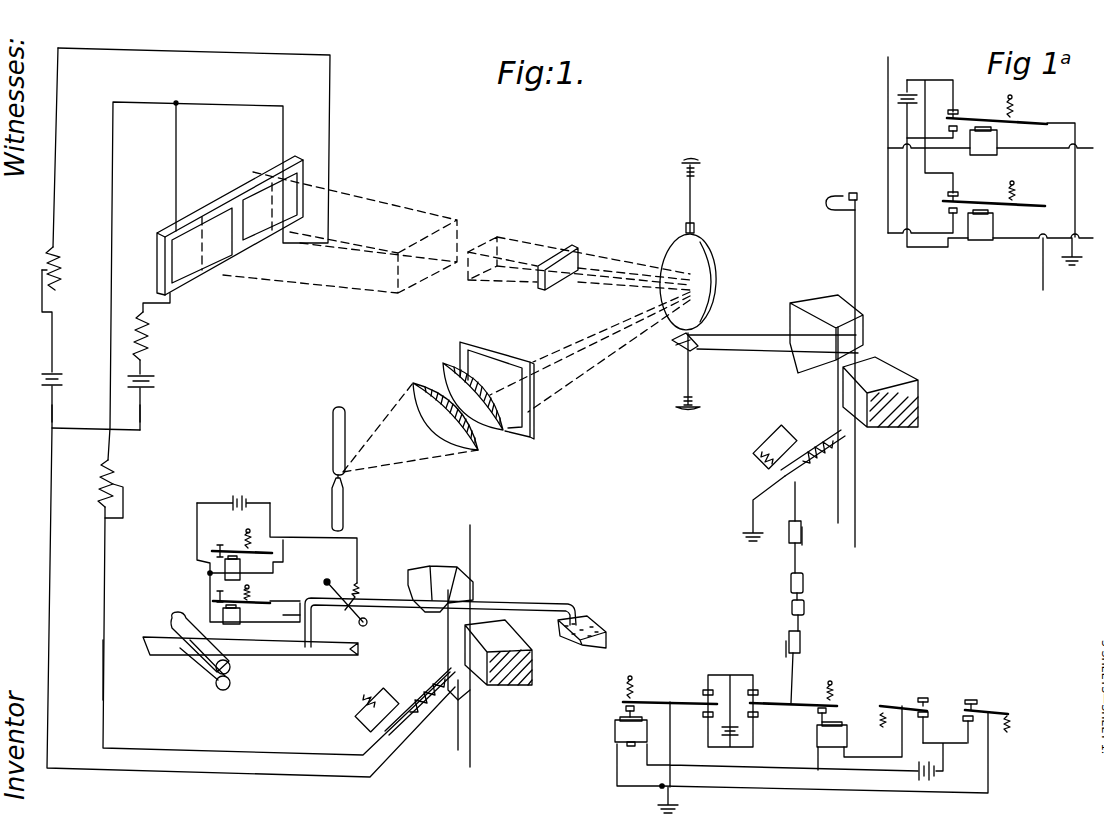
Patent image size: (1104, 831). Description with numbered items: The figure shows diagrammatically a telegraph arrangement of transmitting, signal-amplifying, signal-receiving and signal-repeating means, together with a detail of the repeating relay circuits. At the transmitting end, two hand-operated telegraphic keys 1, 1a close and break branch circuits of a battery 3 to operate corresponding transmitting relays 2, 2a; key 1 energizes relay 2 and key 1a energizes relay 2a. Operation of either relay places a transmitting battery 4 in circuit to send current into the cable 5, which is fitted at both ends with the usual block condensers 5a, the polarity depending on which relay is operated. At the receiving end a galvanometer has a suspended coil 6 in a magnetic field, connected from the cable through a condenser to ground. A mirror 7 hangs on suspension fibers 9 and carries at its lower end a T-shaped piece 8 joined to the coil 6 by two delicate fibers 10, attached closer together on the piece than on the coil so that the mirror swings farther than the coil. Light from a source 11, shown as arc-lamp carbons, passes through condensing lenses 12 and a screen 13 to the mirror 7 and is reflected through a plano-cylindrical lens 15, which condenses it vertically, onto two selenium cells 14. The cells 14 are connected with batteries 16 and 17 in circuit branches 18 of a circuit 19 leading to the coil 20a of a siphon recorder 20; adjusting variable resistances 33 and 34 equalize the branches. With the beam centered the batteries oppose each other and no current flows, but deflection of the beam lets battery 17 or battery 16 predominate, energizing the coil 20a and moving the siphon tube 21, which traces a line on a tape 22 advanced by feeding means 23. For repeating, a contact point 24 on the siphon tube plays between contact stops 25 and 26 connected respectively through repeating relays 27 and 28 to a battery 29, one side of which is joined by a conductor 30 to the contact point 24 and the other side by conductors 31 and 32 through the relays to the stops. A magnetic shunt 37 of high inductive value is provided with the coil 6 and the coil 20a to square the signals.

In FIG. 1, the telegraphic key 1 is at (984, 709).
In FIG. 1, the telegraphic key 1a is at (912, 702).
In FIG. 1, the transmitting relay 2 is at (615, 730).
In FIG. 1, the transmitting relay 2a is at (817, 735).
In FIG. 1, the battery 3 is at (935, 781).
In FIG. 1, the transmitting battery 4 is at (718, 729).
In FIG. 1, the cable 5 is at (805, 592).
In FIG. 1, the block condenser 5a is at (802, 540).
In FIG. 1, the suspended coil 6 is at (833, 383).
In FIG. 1, the mirror 7 is at (715, 268).
In FIG. 1, the T-shaped piece 8 is at (684, 348).
In FIG. 1, the suspension fibers 9 is at (692, 202).
In FIG. 1, the fibers 10 is at (745, 340).
In FIG. 1, the source of light 11 is at (347, 480).
In FIG. 1, the condensing lenses 12 is at (493, 432).
In FIG. 1, the screen 13 is at (536, 430).
In FIG. 1, the selenium cells 14 is at (263, 197).
In FIG. 1, the plano-cylindrical lens 15 is at (568, 247).
In FIG. 1, the battery 16 is at (157, 382).
In FIG. 1, the battery 17 is at (42, 380).
In FIG. 1, the circuit branches 18 is at (50, 412).
In FIG. 1, the circuit 19 is at (103, 662).
In FIG. 1, the siphon recorder 20 is at (498, 672).
In FIG. 1, the coil 20a is at (452, 642).
In FIG. 1, the siphon tube 21 is at (368, 598).
In FIG. 1, the tape 22 is at (262, 647).
In FIG. 1, the feeding means 23 is at (208, 657).
In FIG. 1, the contact point 24 is at (352, 580).
In FIG. 1, the contact stop 25 is at (379, 629).
In FIG. 1, the contact stop 26 is at (337, 574).
In FIG. 1, the repeating relay 27 is at (222, 613).
In FIG. 1a, the repeating relay 27 is at (992, 228).
In FIG. 1, the repeating relay 28 is at (210, 573).
In FIG. 1a, the repeating relay 28 is at (998, 146).
In FIG. 1, the battery 29 is at (236, 497).
In FIG. 1, the conductor 30 is at (285, 535).
In FIG. 1, the conductor 31 is at (282, 617).
In FIG. 1, the conductor 32 is at (273, 573).
In FIG. 1, the adjusting variable resistance 33 is at (150, 340).
In FIG. 1, the adjusting variable resistance 34 is at (42, 296).
In FIG. 1, the magnetic shunt 37 is at (781, 436).